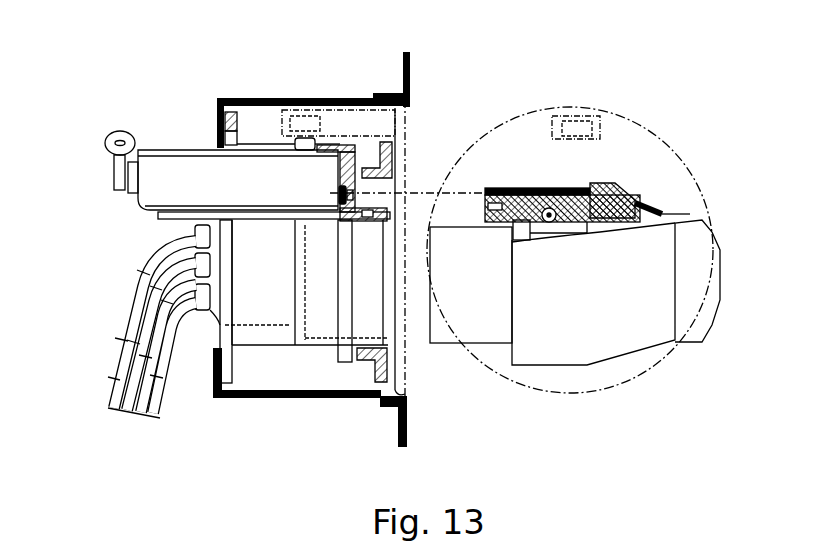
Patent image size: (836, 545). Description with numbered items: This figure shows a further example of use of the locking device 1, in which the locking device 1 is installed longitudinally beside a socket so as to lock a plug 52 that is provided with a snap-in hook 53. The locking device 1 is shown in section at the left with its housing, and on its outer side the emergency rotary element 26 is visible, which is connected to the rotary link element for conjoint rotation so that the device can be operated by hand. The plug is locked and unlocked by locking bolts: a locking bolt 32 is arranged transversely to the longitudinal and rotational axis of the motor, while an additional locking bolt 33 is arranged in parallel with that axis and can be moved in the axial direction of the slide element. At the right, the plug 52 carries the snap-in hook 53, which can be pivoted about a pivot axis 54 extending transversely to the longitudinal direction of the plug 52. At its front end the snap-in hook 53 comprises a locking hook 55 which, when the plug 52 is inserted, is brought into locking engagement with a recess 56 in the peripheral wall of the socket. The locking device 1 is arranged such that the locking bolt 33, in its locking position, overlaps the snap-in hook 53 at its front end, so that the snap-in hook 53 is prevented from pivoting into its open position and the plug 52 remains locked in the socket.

The locking device 1 is at (188, 178).
The emergency rotary element 26 is at (113, 163).
The locking bolt 32 is at (303, 136).
The locking bolt 33 is at (352, 193).
The plug 52 is at (617, 320).
The snap-in hook 53 is at (600, 207).
The pivot axis 54 is at (551, 212).
The locking hook 55 is at (503, 222).
The recess 56 is at (370, 207).